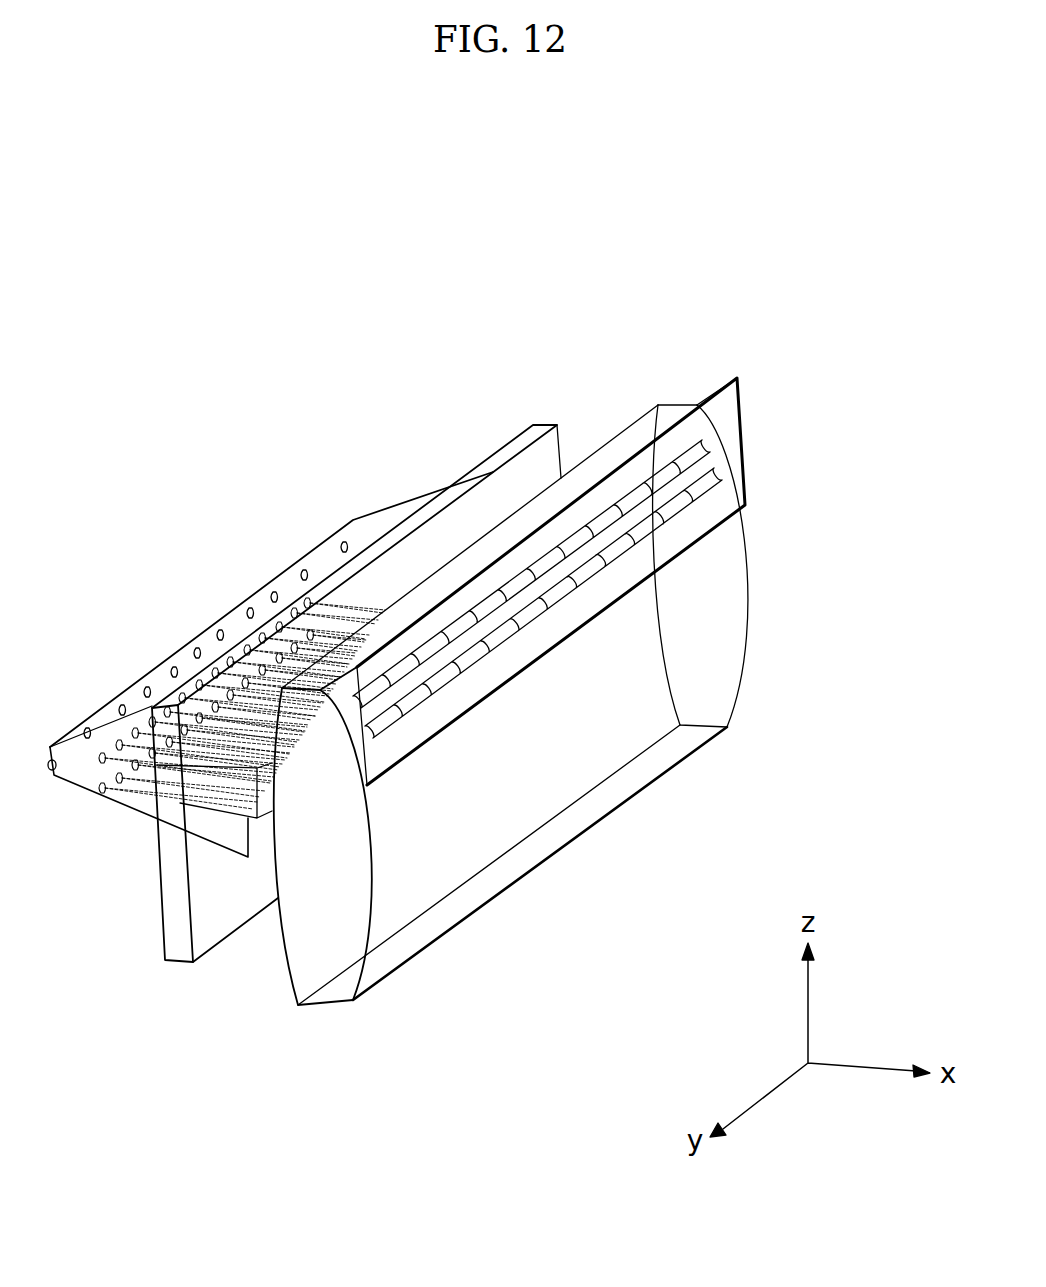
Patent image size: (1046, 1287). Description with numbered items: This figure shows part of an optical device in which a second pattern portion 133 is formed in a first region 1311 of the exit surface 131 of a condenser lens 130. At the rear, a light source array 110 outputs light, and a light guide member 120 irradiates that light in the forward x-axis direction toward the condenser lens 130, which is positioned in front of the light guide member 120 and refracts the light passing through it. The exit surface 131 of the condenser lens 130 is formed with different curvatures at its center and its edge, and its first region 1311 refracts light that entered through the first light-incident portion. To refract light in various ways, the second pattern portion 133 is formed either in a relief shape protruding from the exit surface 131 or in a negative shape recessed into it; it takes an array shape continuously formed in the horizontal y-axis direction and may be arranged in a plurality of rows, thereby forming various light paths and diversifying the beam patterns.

The light source array 110 is at (205, 606).
The light guide member 120 is at (548, 388).
The condenser lens 130 is at (579, 633).
The exit surface 131 is at (753, 593).
The first region 1311 is at (743, 412).
The second pattern portion 133 is at (710, 447).